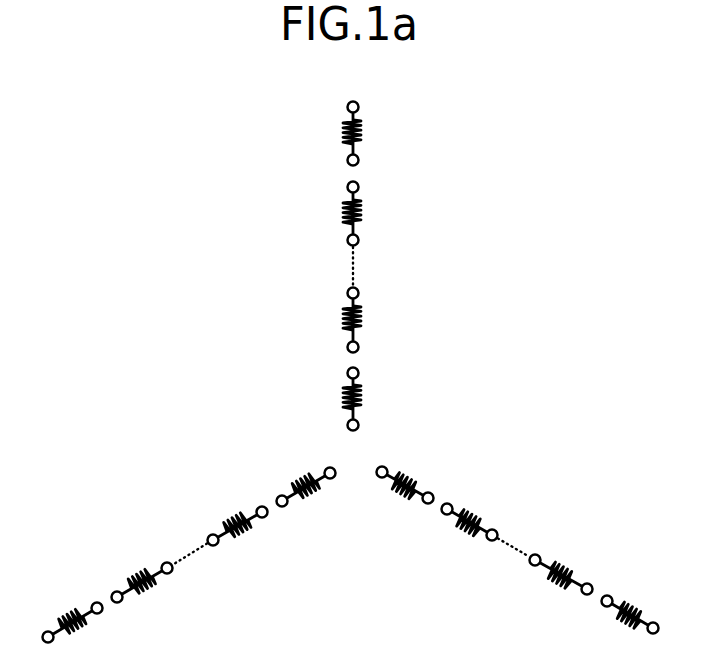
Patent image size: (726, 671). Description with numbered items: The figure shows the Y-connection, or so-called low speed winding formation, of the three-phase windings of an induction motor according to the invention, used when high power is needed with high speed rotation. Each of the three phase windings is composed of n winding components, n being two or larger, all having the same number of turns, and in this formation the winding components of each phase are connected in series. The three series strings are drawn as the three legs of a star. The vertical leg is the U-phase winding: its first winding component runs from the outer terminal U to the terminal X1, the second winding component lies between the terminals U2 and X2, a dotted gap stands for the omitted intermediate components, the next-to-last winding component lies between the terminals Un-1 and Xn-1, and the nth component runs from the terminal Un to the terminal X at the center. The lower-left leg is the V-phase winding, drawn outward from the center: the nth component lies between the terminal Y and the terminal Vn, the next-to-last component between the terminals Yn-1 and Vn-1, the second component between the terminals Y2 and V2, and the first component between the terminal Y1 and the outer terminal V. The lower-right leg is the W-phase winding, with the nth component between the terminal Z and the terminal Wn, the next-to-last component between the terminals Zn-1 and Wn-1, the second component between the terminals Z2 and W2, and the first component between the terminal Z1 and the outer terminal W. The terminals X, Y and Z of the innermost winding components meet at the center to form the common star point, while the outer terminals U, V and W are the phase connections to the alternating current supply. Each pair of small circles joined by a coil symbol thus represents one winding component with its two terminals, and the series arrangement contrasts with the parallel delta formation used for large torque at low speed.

The terminal at one-side end of first winding component of phase U is at (352, 92).
The terminal at other end of first winding component of phase U X1 is at (336, 162).
The terminal at one-side end of second winding component of phase U U2 is at (373, 188).
The terminal at other end of second winding component of phase U X2 is at (373, 245).
The terminal at one-side end of (n-1)th winding component of phase U Un-1 is at (321, 297).
The terminal at other end of (n-1)th winding component of phase U Xn-1 is at (321, 352).
The terminal at one-side end of nth winding component of phase U Un is at (373, 375).
The terminal at other end of nth winding component of phase U X is at (366, 427).
The terminal at other end of nth winding component of phase V Y is at (324, 457).
The terminal at one-side end of nth winding component of phase V Vn is at (271, 487).
The terminal at other end of (n-1)th winding component of phase V Yn-1 is at (287, 528).
The terminal at one-side end of (n-1)th winding component of phase V Vn-1 is at (238, 557).
The terminal at other end of second winding component of phase V Y2 is at (156, 555).
The terminal at one-side end of second winding component of phase V V2 is at (105, 583).
The terminal at other end of first winding component of phase V Y1 is at (111, 625).
The terminal at one-side end of first winding component of phase V is at (35, 651).
The terminal at other end of nth winding component of phase W Z is at (373, 486).
The terminal at one-side end of nth winding component of phase W Wn is at (413, 512).
The terminal at other end of (n-1)th winding component of phase W Zn-1 is at (475, 494).
The terminal at one-side end of (n-1)th winding component of phase W Wn-1 is at (527, 525).
The terminal at other end of second winding component of phase W Z2 is at (518, 570).
The terminal at one-side end of second winding component of phase W W2 is at (565, 603).
The terminal at other end of first winding component of phase W Z1 is at (624, 586).
The terminal at one-side end of first winding component of phase W is at (668, 642).